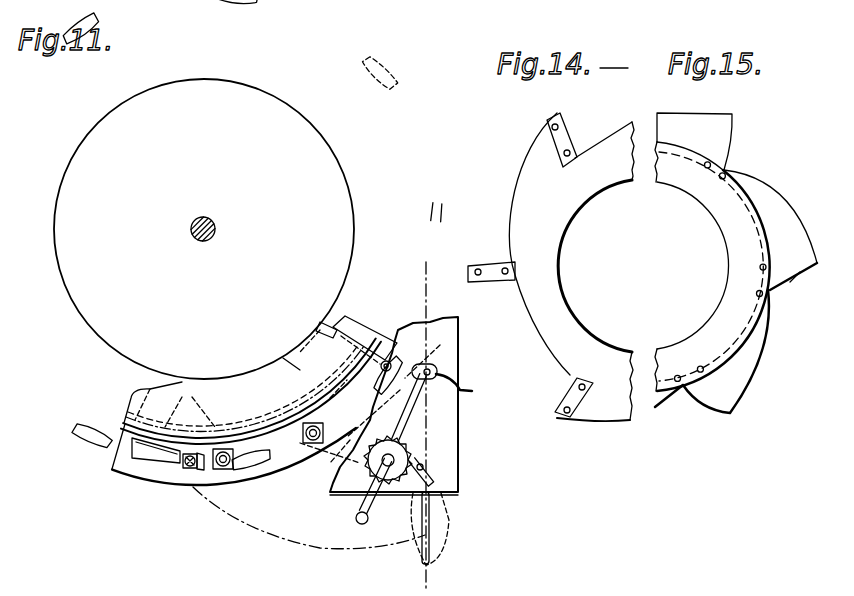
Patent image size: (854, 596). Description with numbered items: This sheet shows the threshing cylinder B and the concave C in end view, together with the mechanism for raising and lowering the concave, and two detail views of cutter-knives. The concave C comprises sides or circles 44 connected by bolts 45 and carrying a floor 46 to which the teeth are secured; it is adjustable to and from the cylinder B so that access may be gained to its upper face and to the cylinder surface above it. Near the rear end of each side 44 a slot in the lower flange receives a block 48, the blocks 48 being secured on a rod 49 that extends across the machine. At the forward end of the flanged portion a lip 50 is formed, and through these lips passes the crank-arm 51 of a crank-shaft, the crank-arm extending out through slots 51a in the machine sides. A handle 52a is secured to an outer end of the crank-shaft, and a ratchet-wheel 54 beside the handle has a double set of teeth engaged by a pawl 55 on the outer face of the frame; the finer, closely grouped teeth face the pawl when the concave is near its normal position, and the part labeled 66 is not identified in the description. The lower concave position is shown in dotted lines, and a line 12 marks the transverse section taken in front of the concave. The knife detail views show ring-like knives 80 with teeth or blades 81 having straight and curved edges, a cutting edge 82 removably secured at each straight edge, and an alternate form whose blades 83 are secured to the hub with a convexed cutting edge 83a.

In FIG. 11, the cylinder B is at (280, 218).
In FIG. 11, the concave C is at (265, 403).
In FIG. 11, the section line 12 12 is at (423, 417).
In FIG. 11, the sides or circles 44 is at (143, 505).
In FIG. 11, the bolts 45 is at (223, 470).
In FIG. 11, the floor 46 is at (363, 340).
In FIG. 11, the blocks 48 is at (197, 472).
In FIG. 11, the rod 49 is at (186, 468).
In FIG. 11, the lip 50 is at (437, 368).
In FIG. 11, the crank-arm 51 is at (414, 389).
In FIG. 11, the slots 51a is at (462, 395).
In FIG. 11, the handle 52a is at (356, 516).
In FIG. 11, the ratchet-wheel 54 is at (384, 462).
In FIG. 11, the pawl 55 is at (431, 478).
In FIG. 11, the ratchet gear 66 is at (404, 453).
In FIG. 14, the knives 80 is at (571, 267).
In FIG. 15, the knives 80 is at (727, 254).
In FIG. 14, the teeth or blades 81 is at (531, 154).
In FIG. 14, the cutting edge 82 is at (560, 141).
In FIG. 15, the teeth or blades 83 is at (750, 291).
In FIG. 15, the cutting edge 83a is at (796, 283).